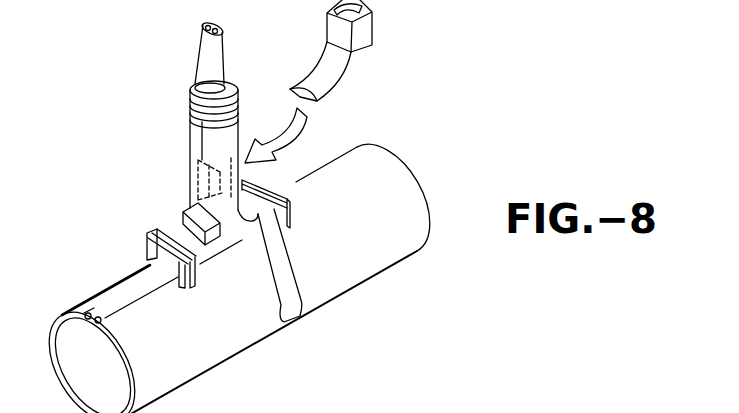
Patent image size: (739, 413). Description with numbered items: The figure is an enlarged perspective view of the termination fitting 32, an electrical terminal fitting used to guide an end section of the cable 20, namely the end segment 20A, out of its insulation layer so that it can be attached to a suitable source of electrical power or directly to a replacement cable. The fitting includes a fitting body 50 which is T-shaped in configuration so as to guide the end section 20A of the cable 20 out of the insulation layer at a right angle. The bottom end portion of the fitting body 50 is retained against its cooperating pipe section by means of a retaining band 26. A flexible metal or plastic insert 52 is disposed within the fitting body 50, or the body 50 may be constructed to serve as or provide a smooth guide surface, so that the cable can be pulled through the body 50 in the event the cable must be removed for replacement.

The cable 20 is at (107, 300).
The end segment of cable 20A is at (247, 128).
The retaining band 26 is at (285, 262).
The termination fitting 32 is at (168, 143).
The fitting body 50 is at (193, 128).
The flexible insert 52 is at (332, 80).